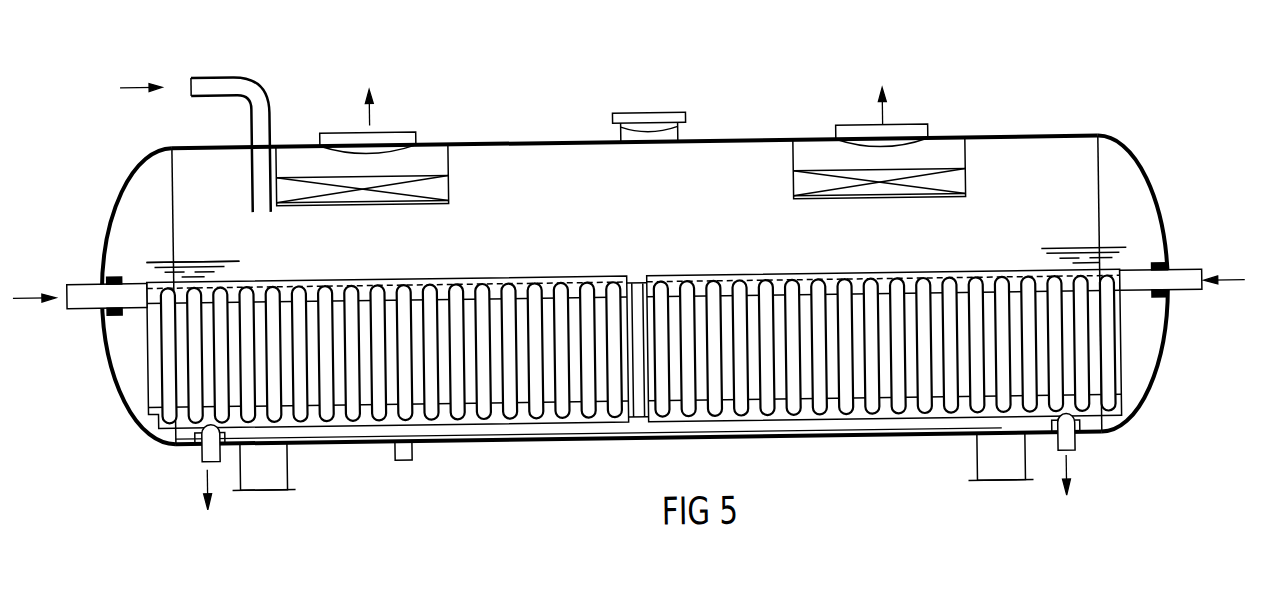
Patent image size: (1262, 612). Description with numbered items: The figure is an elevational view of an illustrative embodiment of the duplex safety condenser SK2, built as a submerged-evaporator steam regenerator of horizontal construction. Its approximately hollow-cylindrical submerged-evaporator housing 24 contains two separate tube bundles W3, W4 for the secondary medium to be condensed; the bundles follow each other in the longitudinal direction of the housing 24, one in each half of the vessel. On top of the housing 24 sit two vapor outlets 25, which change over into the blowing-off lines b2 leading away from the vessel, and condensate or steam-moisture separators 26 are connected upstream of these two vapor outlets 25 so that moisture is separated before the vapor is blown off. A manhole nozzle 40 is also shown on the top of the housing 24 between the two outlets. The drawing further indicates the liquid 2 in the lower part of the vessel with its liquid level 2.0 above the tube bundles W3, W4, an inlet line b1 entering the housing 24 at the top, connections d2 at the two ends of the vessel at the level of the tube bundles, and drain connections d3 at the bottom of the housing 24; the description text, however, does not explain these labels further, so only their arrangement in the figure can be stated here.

The duplex safety condenser SK2 is at (628, 266).
The submerged-evaporator housing 24 is at (722, 142).
The vapor outlets 25 is at (410, 129).
The condensate or steam-moisture separators 26 is at (452, 190).
The manhole nozzle 40 is at (640, 113).
The liquid 2 is at (238, 257).
The liquid level 2.0 is at (200, 250).
The tube bundle W4 is at (368, 276).
The tube bundle W3 is at (690, 275).
The vapour inlet stream b1 is at (213, 72).
The blowing-off lines b2 is at (345, 128).
The cooling water stream d2 is at (85, 272).
The drain stream d3 is at (203, 456).